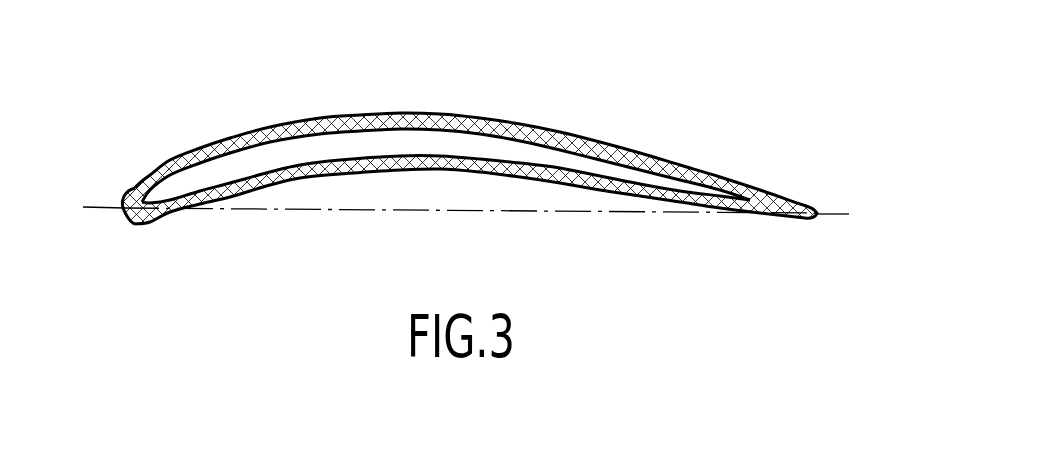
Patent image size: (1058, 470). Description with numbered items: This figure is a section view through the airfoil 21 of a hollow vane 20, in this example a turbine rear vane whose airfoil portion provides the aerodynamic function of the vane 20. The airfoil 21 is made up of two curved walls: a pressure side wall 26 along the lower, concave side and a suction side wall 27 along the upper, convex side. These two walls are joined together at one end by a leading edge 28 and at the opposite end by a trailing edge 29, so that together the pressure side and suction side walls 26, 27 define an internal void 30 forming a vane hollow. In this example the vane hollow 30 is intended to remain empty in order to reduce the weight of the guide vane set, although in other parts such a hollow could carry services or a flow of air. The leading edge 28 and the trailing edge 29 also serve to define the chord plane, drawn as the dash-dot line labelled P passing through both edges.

The vane 20 is at (469, 139).
The airfoil 21 is at (665, 155).
The pressure side wall 26 is at (423, 170).
The suction side wall 27 is at (438, 116).
The leading edge 28 is at (125, 210).
The trailing edge 29 is at (818, 209).
The internal void 30 is at (266, 162).